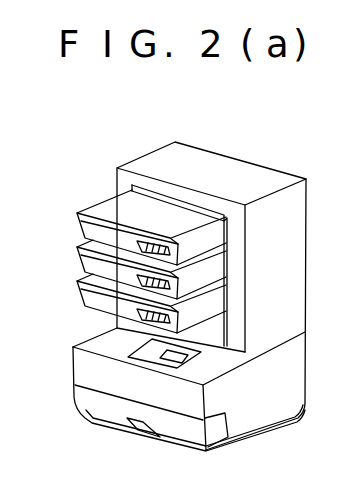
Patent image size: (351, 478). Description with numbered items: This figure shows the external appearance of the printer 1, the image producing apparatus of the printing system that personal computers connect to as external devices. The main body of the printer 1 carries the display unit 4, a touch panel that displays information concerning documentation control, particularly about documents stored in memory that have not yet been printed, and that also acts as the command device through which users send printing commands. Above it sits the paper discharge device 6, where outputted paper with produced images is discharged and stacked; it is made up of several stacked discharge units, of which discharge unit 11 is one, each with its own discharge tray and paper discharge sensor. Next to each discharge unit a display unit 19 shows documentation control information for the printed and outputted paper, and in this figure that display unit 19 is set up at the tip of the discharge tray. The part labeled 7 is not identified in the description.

The printer 1 is at (45, 392).
The display unit 4 is at (133, 353).
The paper discharge device 6 is at (259, 172).
The sheet feed unit 7 is at (99, 184).
The discharge unit (A) 11 is at (112, 213).
The display unit 19 is at (146, 241).